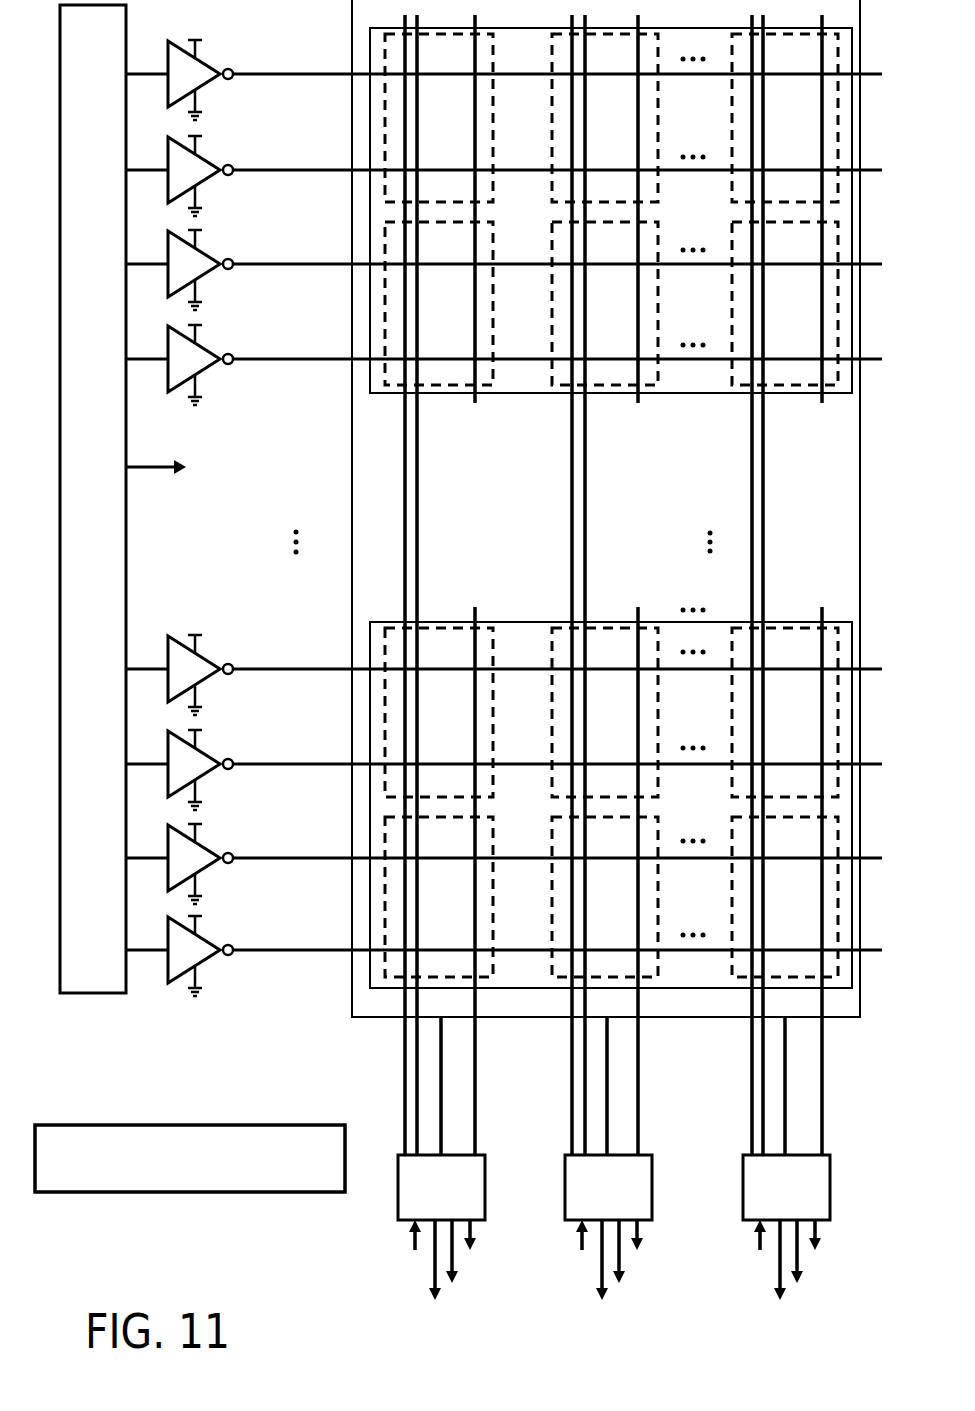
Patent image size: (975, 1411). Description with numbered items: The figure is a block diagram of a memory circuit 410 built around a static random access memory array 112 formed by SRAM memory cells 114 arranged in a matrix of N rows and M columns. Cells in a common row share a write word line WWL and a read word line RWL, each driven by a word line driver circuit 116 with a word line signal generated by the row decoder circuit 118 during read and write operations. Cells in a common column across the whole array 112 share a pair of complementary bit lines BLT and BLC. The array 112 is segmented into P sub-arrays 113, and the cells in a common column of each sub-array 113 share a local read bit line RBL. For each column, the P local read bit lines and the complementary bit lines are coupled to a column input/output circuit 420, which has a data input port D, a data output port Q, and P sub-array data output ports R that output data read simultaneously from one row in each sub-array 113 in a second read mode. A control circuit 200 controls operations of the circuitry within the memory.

The static random access memory (SRAM) array 112 is at (352, 507).
The sub-array 113 is at (550, 526).
The SRAM memory cell 114 is at (488, 633).
The word line driver circuit 116 is at (172, 650).
The row decoder circuit 118 is at (90, 995).
The control circuit 200 is at (233, 1123).
The memory circuit 410 is at (470, 683).
The column input/output (I/O) circuit 420 is at (832, 1187).